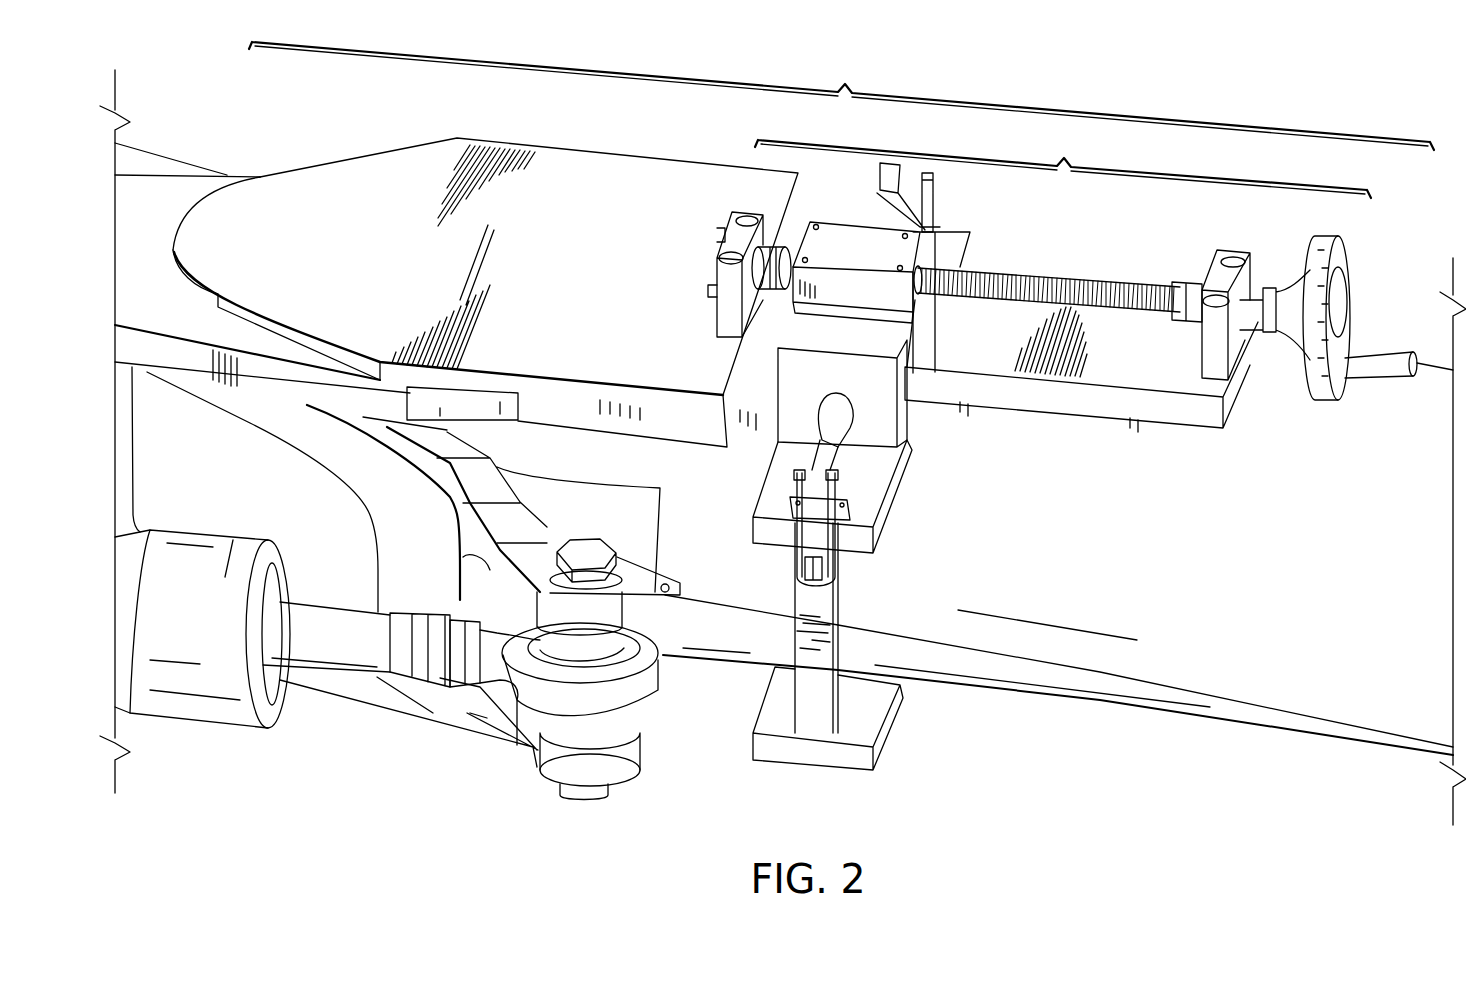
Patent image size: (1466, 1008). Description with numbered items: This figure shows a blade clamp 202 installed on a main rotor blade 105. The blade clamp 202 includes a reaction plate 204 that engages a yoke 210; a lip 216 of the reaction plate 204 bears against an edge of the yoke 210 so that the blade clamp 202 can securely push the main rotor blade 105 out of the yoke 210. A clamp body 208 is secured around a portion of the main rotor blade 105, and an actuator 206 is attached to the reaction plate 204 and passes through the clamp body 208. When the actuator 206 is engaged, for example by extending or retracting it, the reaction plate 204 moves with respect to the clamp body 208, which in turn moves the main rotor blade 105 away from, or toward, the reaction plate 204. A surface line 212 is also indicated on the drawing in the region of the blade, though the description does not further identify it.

The main rotor blade 105 is at (1338, 682).
The blade clamp 202 is at (841, 244).
The reaction plate 204 is at (308, 183).
The actuator 206 is at (1062, 356).
The clamp body 208 is at (733, 772).
The yoke 210 is at (170, 307).
The surface line 212 is at (1022, 692).
The lip 216 is at (516, 386).